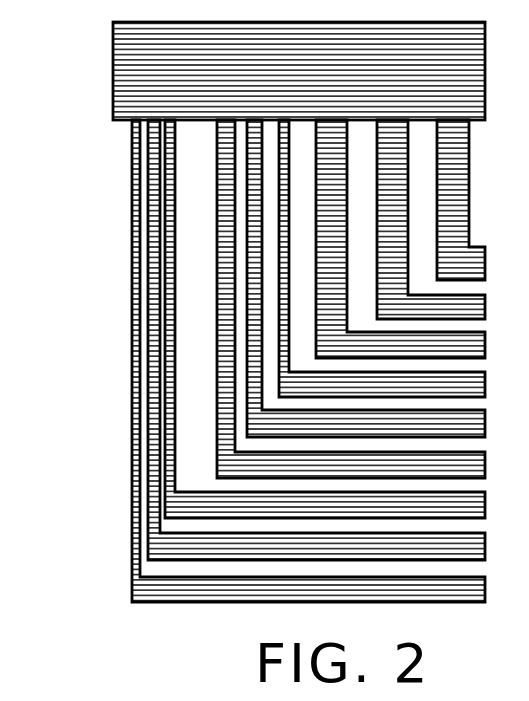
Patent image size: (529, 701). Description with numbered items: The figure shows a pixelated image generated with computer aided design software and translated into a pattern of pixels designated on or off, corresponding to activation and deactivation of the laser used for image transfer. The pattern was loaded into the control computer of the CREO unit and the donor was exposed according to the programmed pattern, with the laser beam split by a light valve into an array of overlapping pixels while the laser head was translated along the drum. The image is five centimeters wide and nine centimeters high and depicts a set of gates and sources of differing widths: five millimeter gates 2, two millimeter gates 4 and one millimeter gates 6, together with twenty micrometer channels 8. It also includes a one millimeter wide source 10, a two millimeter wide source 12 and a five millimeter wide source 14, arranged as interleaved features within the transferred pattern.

The five millimeter gate 2 is at (264, 238).
The two millimeter gate 4 is at (264, 299).
The one millimeter gate 6 is at (131, 259).
The twenty micrometer channel 8 is at (131, 320).
The one millimeter wide source 10 is at (258, 319).
The two millimeter wide source 12 is at (258, 301).
The five millimeter wide source 14 is at (258, 345).